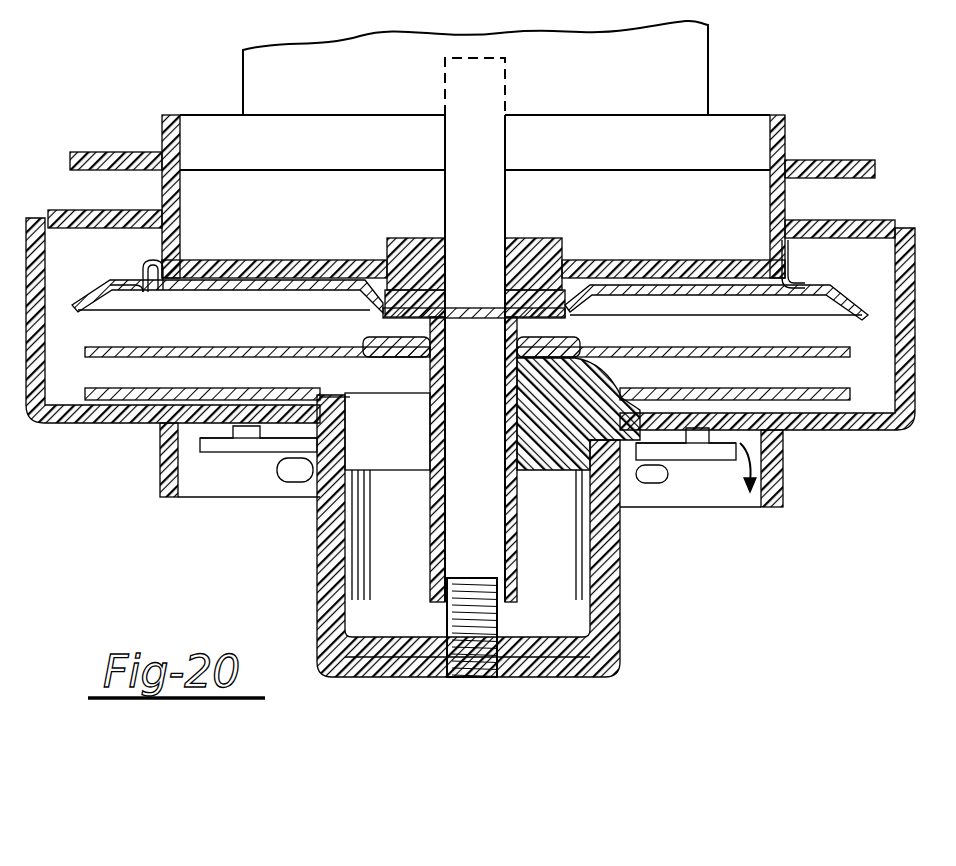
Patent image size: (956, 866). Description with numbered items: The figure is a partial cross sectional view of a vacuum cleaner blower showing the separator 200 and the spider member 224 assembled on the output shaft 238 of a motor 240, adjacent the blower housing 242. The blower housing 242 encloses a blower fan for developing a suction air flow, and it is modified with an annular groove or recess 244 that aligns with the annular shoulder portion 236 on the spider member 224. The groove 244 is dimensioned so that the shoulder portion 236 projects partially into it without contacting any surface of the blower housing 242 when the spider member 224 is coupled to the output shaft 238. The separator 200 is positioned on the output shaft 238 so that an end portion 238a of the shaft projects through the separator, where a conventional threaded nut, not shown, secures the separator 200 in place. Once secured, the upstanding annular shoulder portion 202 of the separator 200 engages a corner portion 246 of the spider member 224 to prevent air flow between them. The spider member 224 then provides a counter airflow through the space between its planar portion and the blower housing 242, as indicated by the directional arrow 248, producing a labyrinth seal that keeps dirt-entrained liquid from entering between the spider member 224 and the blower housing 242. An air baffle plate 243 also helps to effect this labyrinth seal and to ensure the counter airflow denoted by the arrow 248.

The separator 200 is at (622, 632).
The upstanding annular shoulder portion 202 is at (648, 486).
The spider member 224 is at (312, 397).
The annular shoulder portion 236 is at (252, 448).
The output shaft 238 is at (498, 482).
The end portion 238a is at (470, 672).
The motor 240 is at (676, 70).
The blower housing 242 is at (786, 198).
The air baffle plate 243 is at (94, 230).
The annular groove 244 is at (670, 438).
The corner portion 246 is at (300, 460).
The directional arrow 248 is at (783, 452).